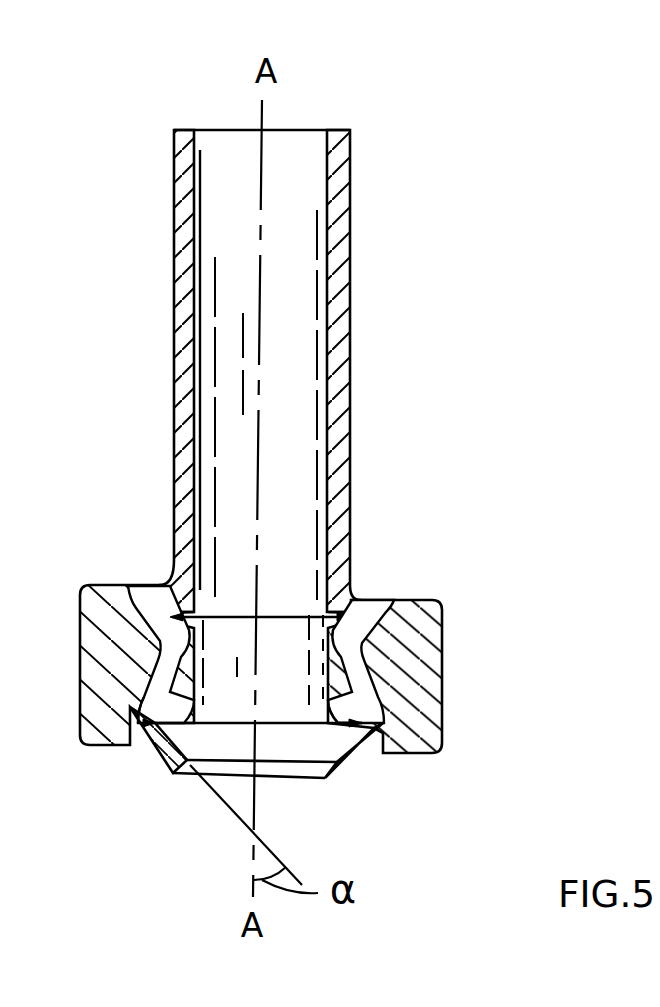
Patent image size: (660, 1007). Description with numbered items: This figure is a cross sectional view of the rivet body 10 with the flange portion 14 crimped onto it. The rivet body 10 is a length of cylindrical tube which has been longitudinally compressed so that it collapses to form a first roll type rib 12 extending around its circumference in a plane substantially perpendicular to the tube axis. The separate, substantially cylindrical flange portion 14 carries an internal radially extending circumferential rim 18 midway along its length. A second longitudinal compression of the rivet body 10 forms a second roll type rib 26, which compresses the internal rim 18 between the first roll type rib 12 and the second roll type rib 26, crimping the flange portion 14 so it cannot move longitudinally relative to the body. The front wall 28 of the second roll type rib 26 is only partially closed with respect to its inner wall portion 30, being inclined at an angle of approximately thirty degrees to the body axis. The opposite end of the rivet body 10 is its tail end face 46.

The rivet body 10 is at (422, 282).
The first roll type rib 12 is at (376, 604).
The flange portion 14 is at (427, 637).
The internal rim 18 is at (357, 684).
The second roll type rib 26 is at (380, 724).
The front wall 28 is at (347, 760).
The inner wall portion 30 is at (100, 690).
The tail end face 46 is at (349, 405).